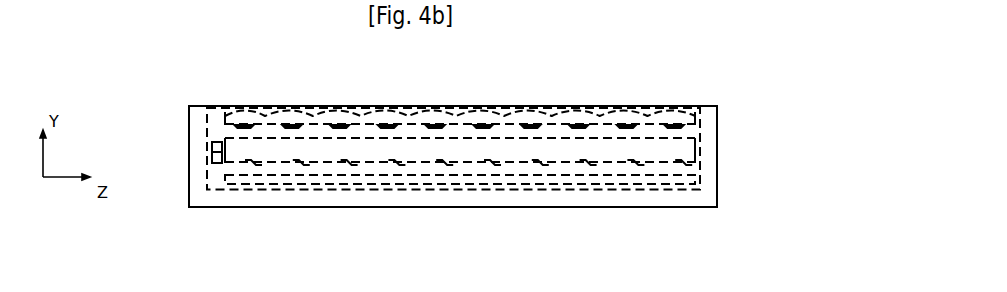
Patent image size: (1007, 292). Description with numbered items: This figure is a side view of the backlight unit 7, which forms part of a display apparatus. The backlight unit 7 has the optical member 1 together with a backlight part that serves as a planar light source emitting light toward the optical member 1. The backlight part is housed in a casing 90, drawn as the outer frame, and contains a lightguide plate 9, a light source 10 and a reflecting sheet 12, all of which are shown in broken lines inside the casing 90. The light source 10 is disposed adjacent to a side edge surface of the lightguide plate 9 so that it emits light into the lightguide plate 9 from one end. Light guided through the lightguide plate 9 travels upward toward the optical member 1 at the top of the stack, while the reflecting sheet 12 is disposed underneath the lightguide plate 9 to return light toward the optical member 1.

The backlight unit 7 is at (668, 98).
The optical member 1 is at (700, 114).
The lightguide plate 9 is at (700, 145).
The reflecting sheet 12 is at (700, 176).
The light source 10 is at (207, 142).
The casing 90 is at (607, 208).